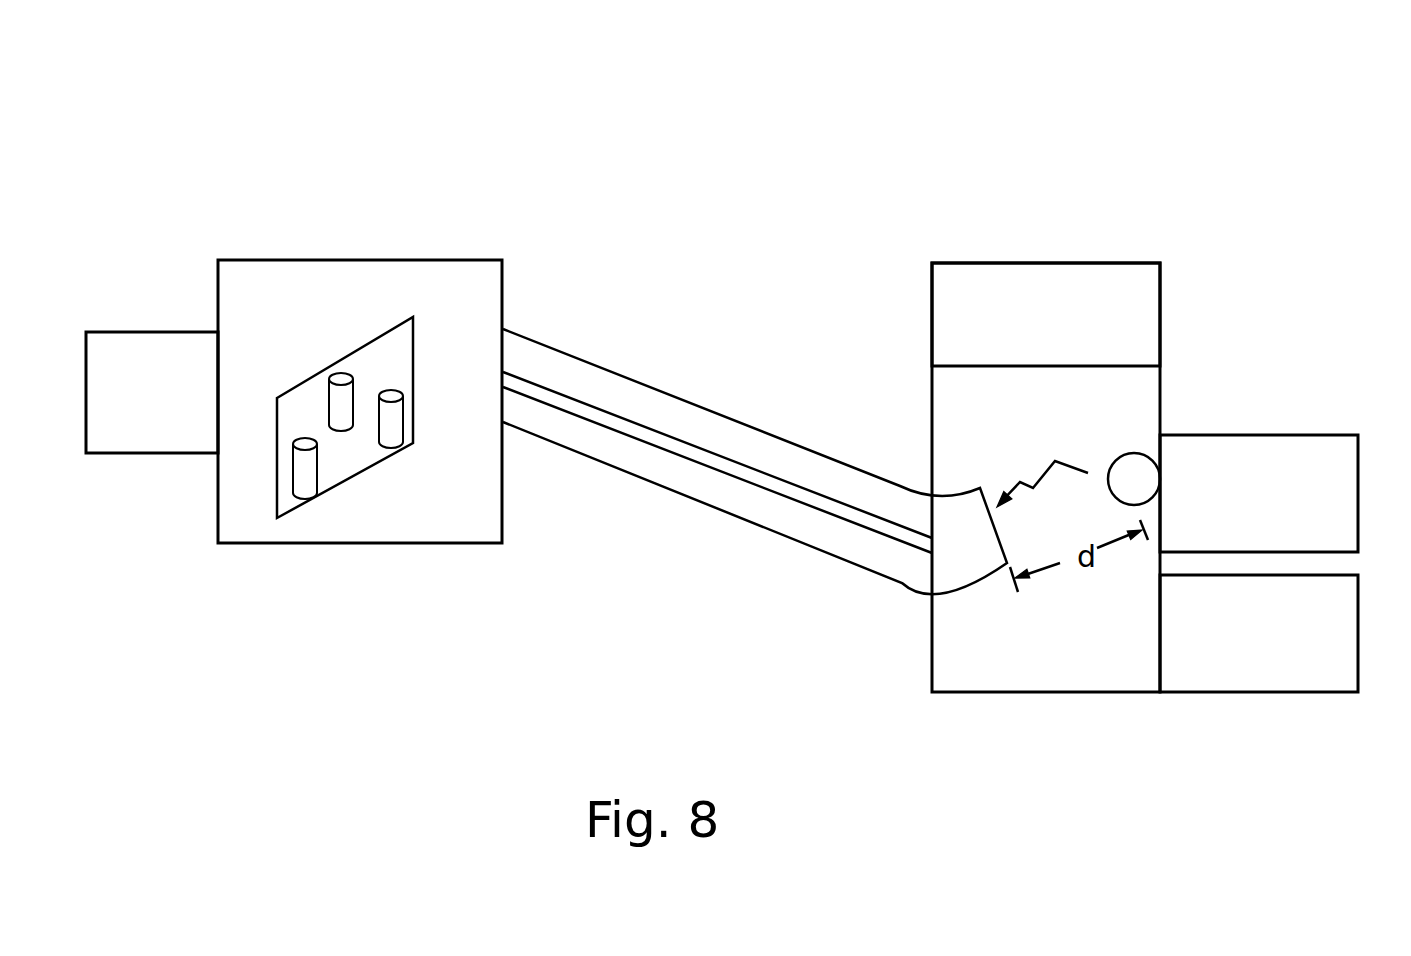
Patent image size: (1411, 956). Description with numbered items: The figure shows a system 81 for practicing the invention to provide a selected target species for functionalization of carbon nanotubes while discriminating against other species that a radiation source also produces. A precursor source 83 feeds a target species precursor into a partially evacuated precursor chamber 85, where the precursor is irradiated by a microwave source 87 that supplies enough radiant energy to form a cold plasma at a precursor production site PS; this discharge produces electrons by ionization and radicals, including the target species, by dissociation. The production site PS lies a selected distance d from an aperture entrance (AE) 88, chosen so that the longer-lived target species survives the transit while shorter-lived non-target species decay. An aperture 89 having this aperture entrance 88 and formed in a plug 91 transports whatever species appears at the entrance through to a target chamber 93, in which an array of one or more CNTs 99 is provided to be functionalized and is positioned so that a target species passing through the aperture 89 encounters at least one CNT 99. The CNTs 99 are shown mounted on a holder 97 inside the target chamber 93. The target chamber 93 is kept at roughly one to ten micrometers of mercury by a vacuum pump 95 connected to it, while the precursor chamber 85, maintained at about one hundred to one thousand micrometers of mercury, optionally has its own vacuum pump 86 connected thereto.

The system 81 is at (468, 96).
The precursor source 83 is at (1277, 433).
The precursor chamber 85 is at (1162, 393).
The vacuum pump 86 is at (1362, 620).
The microwave source 87 is at (1048, 267).
The aperture entrance 88 is at (1000, 538).
The aperture 89 is at (768, 482).
The plug 91 is at (670, 402).
The target chamber 93 is at (367, 265).
The vacuum pump 95 is at (140, 337).
The substrate holder 97 is at (305, 380).
The CNT 99 is at (341, 420).